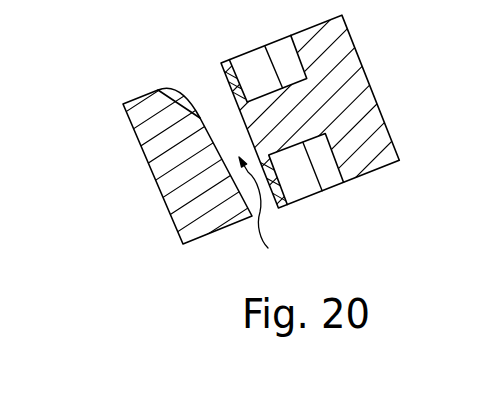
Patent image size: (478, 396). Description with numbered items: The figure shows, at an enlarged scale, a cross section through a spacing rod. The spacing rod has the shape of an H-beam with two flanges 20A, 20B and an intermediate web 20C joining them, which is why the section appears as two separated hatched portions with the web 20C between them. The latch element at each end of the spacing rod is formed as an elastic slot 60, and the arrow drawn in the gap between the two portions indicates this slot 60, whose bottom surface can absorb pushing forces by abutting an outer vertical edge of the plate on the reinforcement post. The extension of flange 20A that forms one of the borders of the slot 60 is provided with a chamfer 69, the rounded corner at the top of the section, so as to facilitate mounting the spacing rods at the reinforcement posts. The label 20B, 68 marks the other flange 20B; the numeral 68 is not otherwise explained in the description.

The flange 20A is at (307, 126).
The flange 20B is at (166, 139).
The intermediate web 20C is at (282, 120).
The elastic slot 60 is at (270, 214).
The wall section 68 is at (180, 197).
The chamfer 69 is at (192, 110).